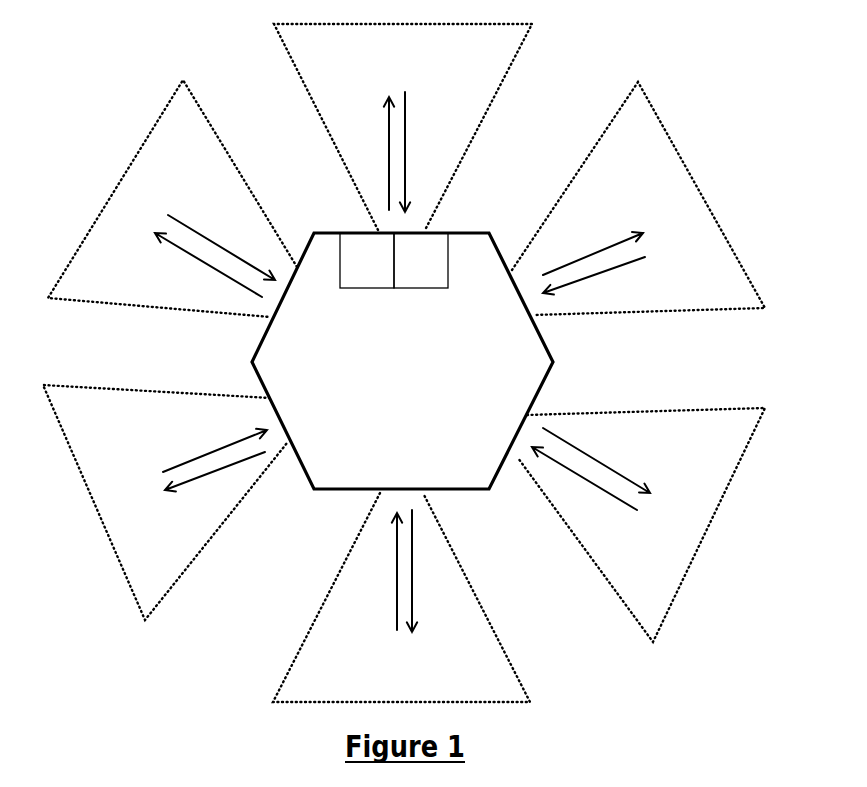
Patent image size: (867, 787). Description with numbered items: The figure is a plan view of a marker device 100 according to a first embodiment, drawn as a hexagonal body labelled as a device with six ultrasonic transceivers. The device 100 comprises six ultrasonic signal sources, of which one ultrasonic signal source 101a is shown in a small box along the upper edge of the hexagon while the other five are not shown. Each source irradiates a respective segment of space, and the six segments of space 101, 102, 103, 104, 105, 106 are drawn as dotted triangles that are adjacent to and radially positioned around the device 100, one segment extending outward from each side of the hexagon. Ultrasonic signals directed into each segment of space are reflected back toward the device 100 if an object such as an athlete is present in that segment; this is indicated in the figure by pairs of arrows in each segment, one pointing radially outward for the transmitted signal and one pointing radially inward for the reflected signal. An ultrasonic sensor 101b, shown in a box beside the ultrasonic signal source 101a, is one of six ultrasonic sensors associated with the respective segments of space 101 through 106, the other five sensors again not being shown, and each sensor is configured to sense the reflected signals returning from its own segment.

The marker device 100 is at (414, 478).
The segment of space 101 is at (341, 65).
The ultrasonic signal source 101a is at (387, 280).
The ultrasonic sensor 101b is at (441, 280).
The segment of space 102 is at (119, 281).
The segment of space 103 is at (169, 563).
The segment of space 104 is at (341, 683).
The segment of space 105 is at (654, 578).
The segment of space 106 is at (711, 291).